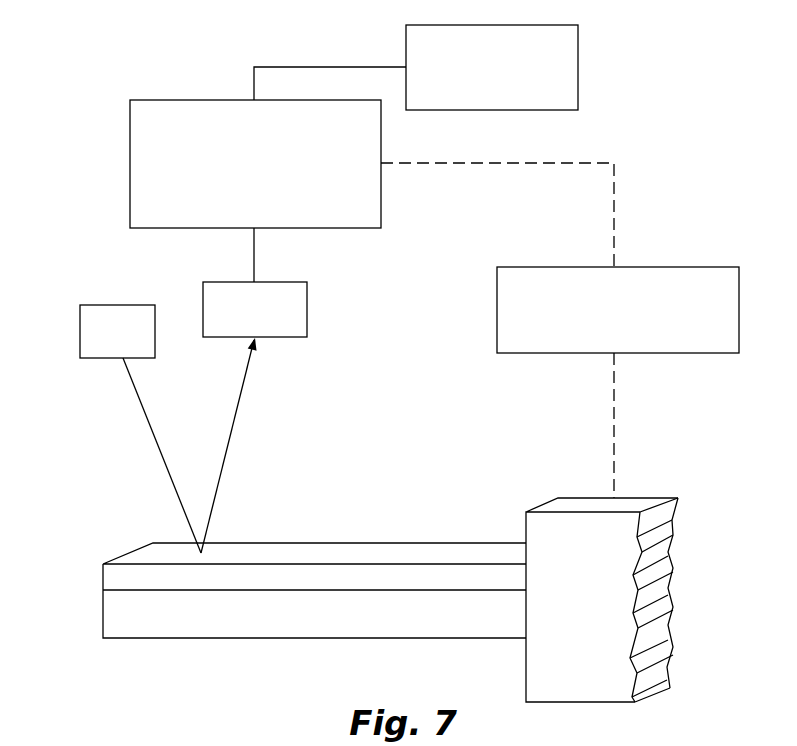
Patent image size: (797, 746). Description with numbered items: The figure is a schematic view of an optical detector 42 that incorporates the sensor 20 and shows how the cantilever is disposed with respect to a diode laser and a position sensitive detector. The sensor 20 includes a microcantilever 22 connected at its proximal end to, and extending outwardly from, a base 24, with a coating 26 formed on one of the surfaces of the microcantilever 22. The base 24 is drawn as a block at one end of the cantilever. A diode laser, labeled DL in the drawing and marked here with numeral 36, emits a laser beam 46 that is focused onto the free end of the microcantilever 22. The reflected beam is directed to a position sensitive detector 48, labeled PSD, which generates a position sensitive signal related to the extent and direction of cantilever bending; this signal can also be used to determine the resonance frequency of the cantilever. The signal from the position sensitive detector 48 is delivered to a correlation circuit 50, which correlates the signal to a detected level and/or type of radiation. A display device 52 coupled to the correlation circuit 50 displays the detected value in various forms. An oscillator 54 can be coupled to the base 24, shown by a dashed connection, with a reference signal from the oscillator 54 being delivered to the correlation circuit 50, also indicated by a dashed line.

The sensor 20 is at (78, 620).
The microcantilever 22 is at (310, 645).
The base 24 is at (641, 505).
The coating 26 is at (418, 553).
The diode laser 36 is at (80, 325).
The optical detector 42 is at (697, 143).
The laser beam 46 is at (163, 457).
The position sensitive detector 48 is at (307, 309).
The correlation circuit 50 is at (130, 137).
The display device 52 is at (578, 61).
The oscillator 54 is at (497, 323).